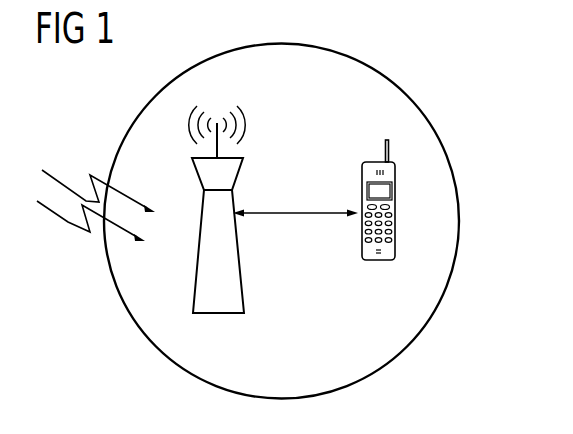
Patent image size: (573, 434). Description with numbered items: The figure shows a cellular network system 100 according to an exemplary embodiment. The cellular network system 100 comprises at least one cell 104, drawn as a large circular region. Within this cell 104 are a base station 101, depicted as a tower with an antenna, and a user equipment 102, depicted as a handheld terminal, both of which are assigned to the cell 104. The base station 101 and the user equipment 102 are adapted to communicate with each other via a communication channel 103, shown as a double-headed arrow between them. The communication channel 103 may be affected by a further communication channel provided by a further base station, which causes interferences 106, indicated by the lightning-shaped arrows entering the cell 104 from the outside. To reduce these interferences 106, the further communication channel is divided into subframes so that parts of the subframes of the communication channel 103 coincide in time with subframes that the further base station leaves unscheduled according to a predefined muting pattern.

The cellular network system 100 is at (441, 80).
The base station 101 is at (242, 268).
The user equipment 102 is at (378, 261).
The communication channel 103 is at (290, 210).
The cell 104 is at (459, 219).
The interferences 106 is at (71, 190).